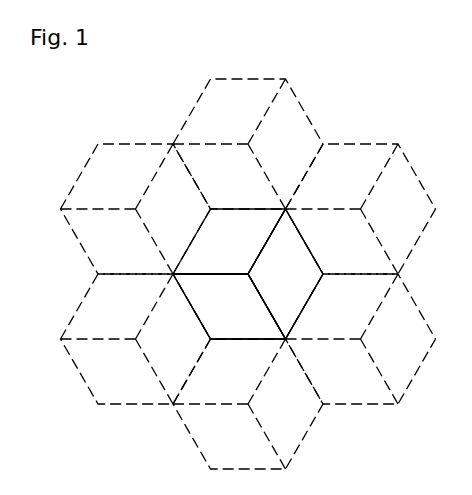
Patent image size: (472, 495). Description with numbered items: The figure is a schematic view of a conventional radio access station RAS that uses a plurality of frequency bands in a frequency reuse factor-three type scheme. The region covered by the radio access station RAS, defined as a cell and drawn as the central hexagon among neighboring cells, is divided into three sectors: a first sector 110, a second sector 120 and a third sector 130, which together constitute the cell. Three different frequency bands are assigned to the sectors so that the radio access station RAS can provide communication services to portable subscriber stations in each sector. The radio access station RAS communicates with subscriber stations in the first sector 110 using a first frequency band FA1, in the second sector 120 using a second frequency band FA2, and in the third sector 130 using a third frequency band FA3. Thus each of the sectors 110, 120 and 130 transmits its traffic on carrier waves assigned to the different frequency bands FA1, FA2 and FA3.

The first sector 110 is at (233, 221).
The second sector 120 is at (200, 303).
The third sector 130 is at (293, 252).
The radio access station RAS is at (249, 274).
The first frequency band FA1 is at (229, 241).
The second frequency band FA2 is at (229, 306).
The third frequency band FA3 is at (272, 274).